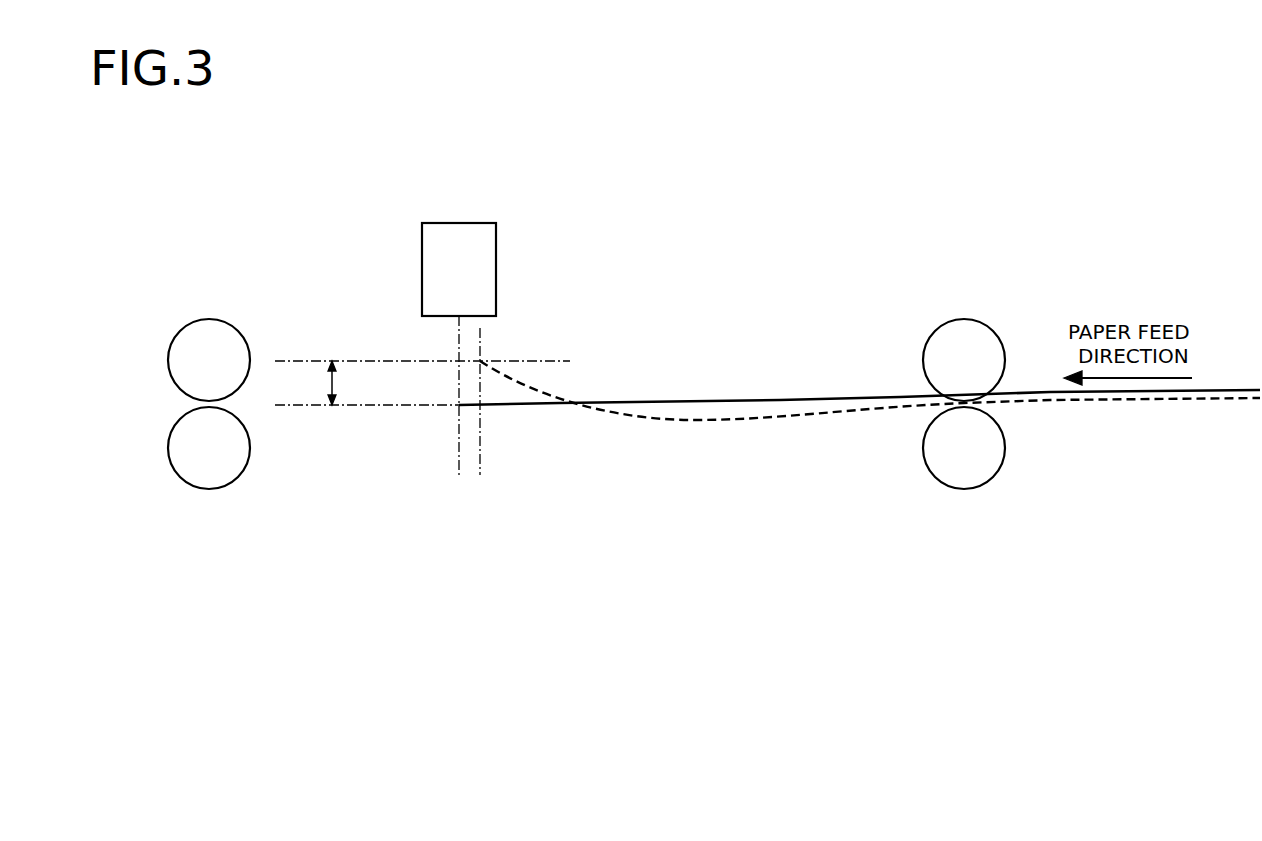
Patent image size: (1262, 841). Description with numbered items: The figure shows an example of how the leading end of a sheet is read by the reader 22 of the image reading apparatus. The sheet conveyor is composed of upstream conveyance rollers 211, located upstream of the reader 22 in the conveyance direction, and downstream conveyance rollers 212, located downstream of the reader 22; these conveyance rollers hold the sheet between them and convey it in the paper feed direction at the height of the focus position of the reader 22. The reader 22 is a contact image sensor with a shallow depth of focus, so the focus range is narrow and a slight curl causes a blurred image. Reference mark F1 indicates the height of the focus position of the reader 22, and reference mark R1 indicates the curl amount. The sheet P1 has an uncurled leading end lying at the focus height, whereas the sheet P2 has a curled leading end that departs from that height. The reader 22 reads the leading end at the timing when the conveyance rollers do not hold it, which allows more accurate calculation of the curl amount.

The downstream conveyance rollers 212 is at (216, 336).
The upstream conveyance rollers 211 is at (966, 334).
The reader 22 is at (476, 232).
The curl amount R1 is at (422, 383).
The height of the focus position of the reader F1 is at (424, 408).
The sheet with an uncurled leading end P1 is at (695, 399).
The sheet with a curled leading end P2 is at (690, 424).